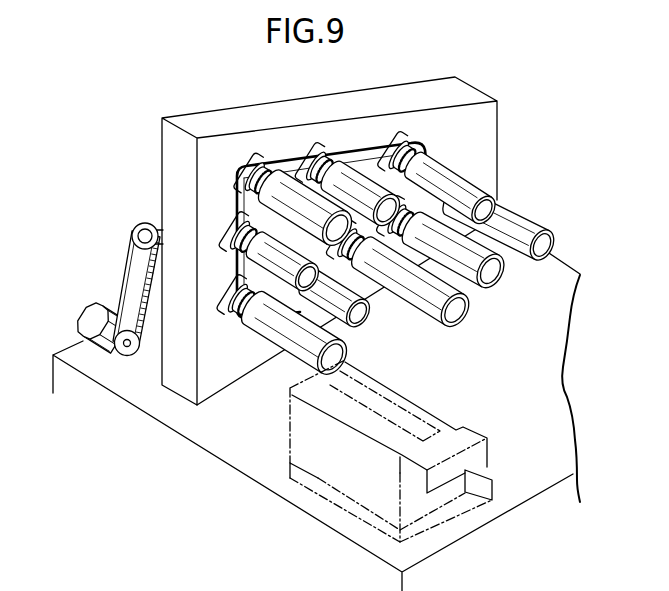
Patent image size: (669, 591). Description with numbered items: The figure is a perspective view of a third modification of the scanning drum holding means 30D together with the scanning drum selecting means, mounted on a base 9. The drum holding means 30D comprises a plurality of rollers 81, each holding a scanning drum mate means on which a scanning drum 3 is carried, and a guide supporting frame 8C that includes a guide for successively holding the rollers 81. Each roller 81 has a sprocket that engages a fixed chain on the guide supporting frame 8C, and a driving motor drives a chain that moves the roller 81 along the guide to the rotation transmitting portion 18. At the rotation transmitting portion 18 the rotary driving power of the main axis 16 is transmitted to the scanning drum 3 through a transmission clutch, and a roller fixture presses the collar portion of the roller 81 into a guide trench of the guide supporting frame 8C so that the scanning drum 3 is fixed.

The scanning drum 3 is at (352, 347).
The base 9 is at (212, 446).
The main axis 16 is at (147, 222).
The rotation transmitting portion 18 is at (230, 305).
The roller 81 is at (240, 277).
The guide supporting frame 8C is at (253, 367).
The drum holding means 30D is at (451, 134).